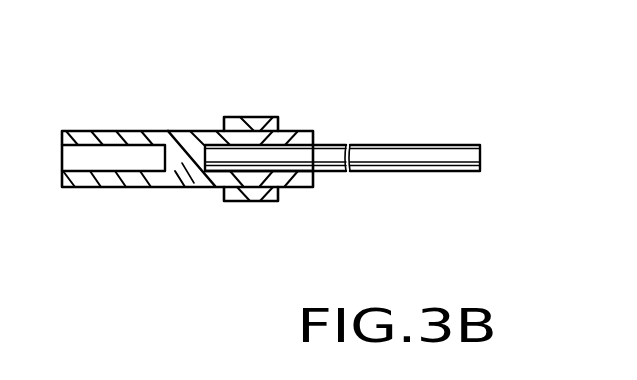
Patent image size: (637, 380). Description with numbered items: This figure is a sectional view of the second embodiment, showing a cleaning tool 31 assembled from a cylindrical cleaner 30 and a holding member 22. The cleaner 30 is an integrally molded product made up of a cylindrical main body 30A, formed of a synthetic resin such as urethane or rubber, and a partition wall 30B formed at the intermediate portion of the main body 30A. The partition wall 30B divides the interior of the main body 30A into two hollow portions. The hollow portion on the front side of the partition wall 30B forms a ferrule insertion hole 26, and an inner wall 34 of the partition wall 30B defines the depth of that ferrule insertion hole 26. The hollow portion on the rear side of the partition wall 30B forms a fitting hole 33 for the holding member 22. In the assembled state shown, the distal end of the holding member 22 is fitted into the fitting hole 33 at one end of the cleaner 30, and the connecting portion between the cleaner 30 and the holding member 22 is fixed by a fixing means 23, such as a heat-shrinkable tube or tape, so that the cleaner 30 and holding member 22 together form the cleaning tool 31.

The cleaning tool 31 is at (380, 23).
The cleaner 30 is at (187, 183).
The cylindrical main body 30A is at (208, 172).
The partition wall 30B is at (187, 162).
The ferrule insertion hole 26 is at (100, 153).
The inner wall 34 is at (165, 162).
The fixing means 23 is at (258, 127).
The holding member 22 is at (422, 145).
The fitting hole 33 is at (233, 161).